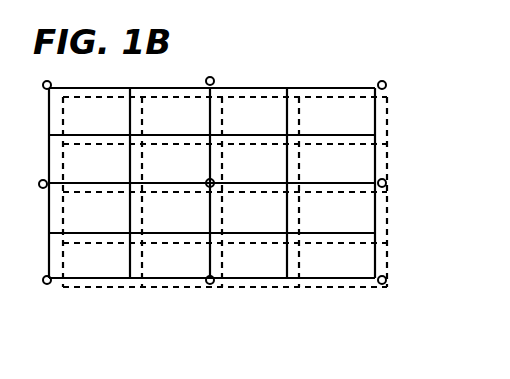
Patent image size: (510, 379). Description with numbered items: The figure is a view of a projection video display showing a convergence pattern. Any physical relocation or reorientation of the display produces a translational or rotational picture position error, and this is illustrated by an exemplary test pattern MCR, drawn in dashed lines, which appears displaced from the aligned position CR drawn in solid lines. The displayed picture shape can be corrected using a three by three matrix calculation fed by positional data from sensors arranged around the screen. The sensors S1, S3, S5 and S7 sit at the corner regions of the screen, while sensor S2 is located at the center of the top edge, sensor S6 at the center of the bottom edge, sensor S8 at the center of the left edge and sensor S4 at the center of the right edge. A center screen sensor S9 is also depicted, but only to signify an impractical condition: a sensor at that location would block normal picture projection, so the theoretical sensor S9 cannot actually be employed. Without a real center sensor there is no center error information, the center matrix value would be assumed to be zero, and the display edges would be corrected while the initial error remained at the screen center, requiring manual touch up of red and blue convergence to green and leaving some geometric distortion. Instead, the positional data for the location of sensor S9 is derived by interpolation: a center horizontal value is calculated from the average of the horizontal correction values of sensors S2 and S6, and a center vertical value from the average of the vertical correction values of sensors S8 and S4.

The sensor S1 is at (59, 80).
The sensor S2 is at (194, 80).
The sensor S3 is at (363, 80).
The sensor S4 is at (391, 173).
The sensor S5 is at (367, 286).
The sensor S6 is at (195, 286).
The sensor S7 is at (61, 286).
The sensor S8 is at (33, 173).
The center screen sensor S9 is at (207, 180).
The aligned position CR is at (128, 259).
The test pattern MCR is at (289, 259).